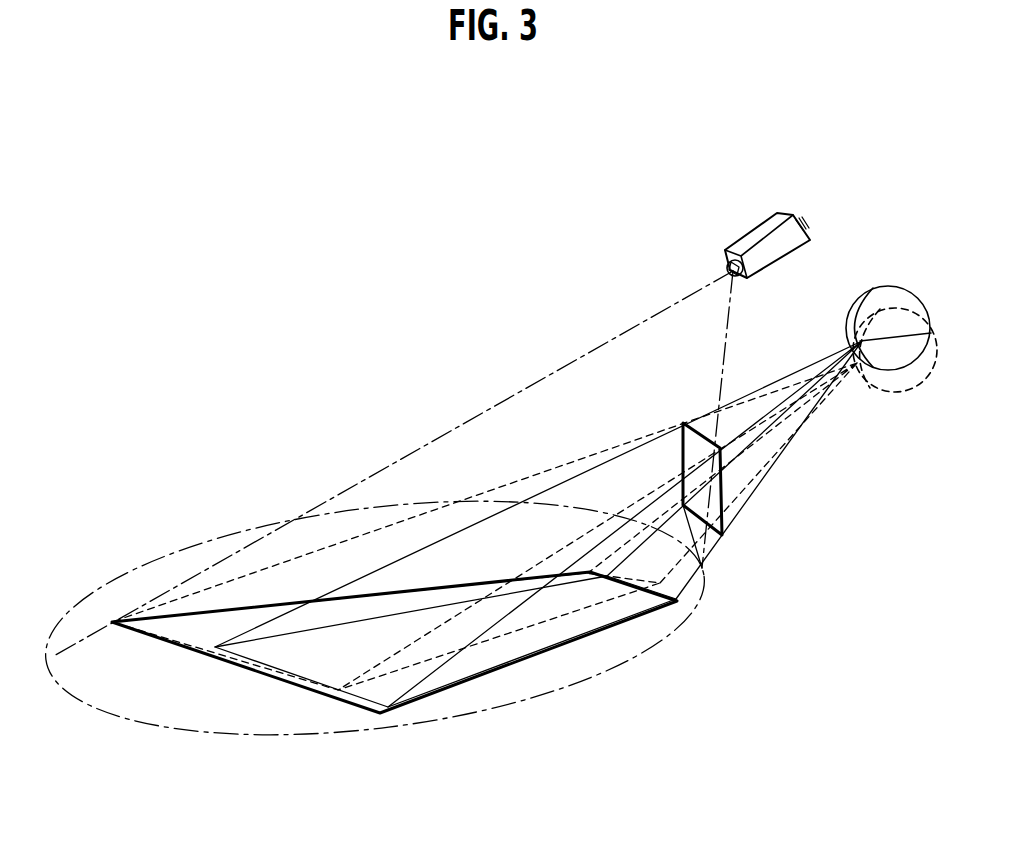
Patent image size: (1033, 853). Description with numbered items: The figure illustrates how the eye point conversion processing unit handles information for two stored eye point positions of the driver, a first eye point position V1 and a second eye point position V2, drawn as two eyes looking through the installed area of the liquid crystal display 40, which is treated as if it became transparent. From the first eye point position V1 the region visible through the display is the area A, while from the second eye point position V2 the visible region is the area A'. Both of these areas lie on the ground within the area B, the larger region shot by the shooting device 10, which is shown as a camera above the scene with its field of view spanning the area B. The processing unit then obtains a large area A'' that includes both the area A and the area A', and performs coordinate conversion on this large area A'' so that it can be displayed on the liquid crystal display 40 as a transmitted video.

The shooting device 10 is at (777, 212).
The liquid crystal display 40 is at (721, 488).
The area B is at (137, 568).
The area A is at (394, 659).
The area A' is at (386, 690).
The large area A" A'' is at (445, 651).
The first eye point position V1 is at (858, 338).
The second eye point position V2 is at (852, 372).